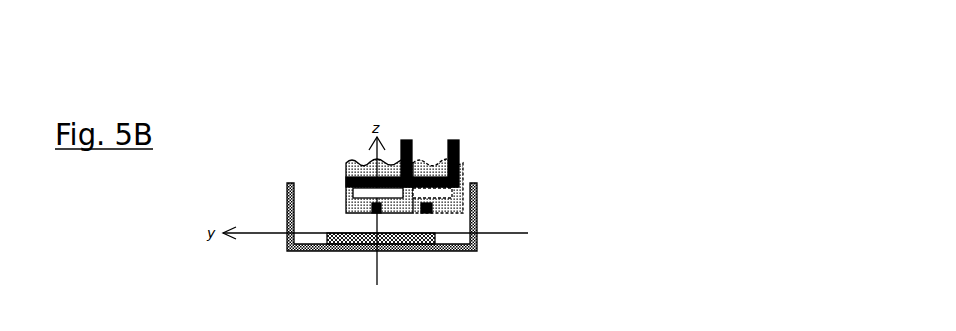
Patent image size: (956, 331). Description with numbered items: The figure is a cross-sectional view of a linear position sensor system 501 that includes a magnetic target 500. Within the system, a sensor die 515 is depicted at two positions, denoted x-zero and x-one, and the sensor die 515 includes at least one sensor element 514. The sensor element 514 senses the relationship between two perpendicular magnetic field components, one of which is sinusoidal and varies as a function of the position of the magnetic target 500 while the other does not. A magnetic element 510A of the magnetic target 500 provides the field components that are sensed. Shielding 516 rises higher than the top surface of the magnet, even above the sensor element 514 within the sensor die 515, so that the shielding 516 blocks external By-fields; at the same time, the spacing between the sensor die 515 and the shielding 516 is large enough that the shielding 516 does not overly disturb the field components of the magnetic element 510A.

The magnetic target 500 is at (481, 249).
The linear position sensor system 501 is at (678, 159).
The magnetic element 510A is at (402, 248).
The sensor element 514 is at (372, 212).
The sensor die 515 is at (345, 186).
The shielding 516 is at (456, 243).